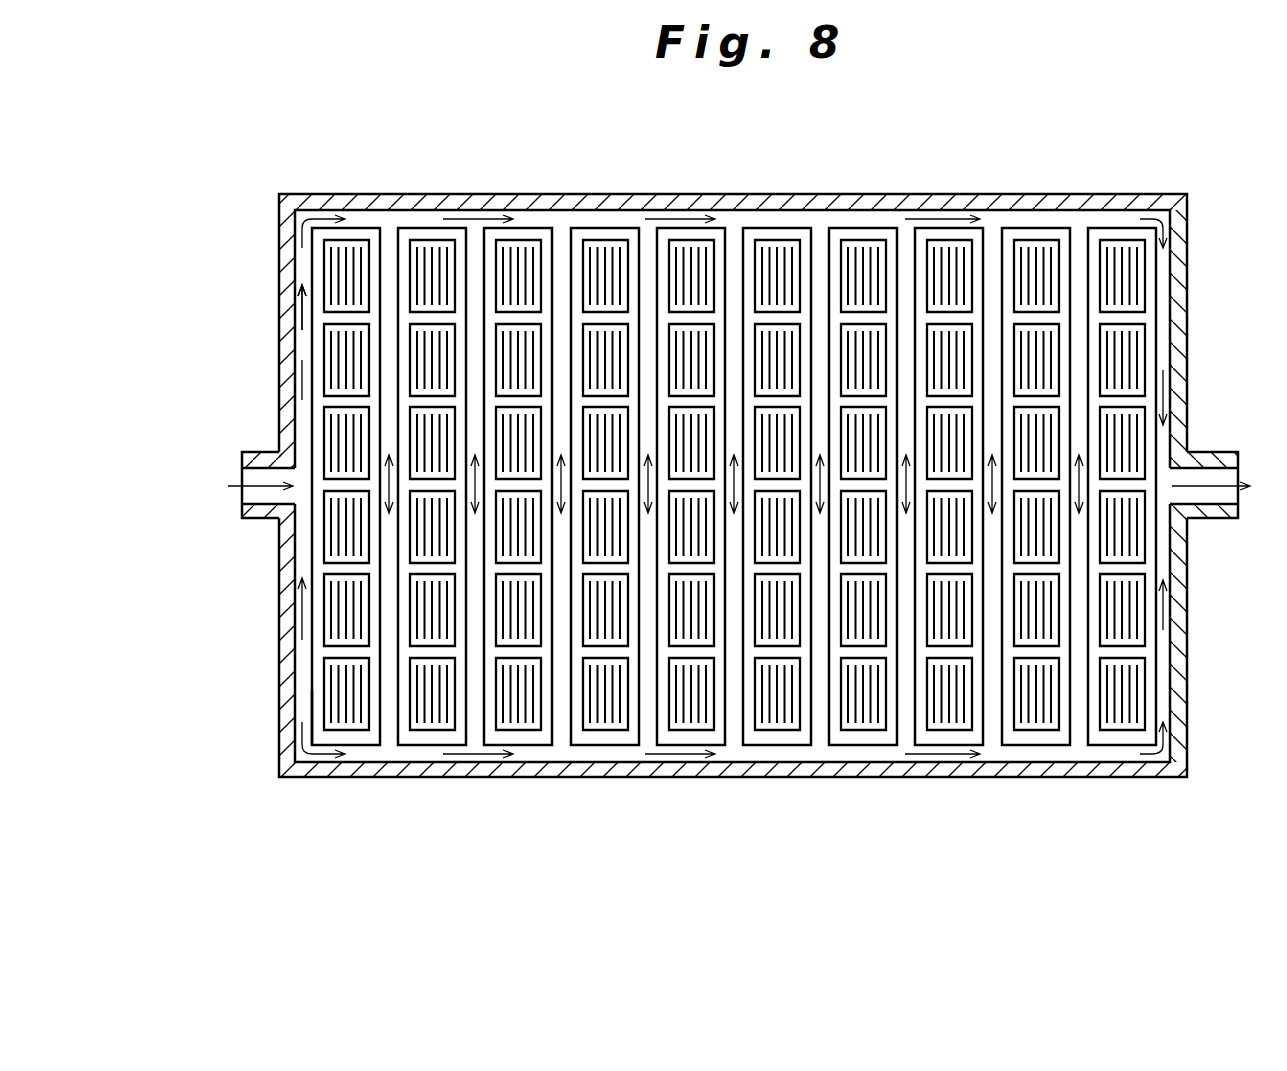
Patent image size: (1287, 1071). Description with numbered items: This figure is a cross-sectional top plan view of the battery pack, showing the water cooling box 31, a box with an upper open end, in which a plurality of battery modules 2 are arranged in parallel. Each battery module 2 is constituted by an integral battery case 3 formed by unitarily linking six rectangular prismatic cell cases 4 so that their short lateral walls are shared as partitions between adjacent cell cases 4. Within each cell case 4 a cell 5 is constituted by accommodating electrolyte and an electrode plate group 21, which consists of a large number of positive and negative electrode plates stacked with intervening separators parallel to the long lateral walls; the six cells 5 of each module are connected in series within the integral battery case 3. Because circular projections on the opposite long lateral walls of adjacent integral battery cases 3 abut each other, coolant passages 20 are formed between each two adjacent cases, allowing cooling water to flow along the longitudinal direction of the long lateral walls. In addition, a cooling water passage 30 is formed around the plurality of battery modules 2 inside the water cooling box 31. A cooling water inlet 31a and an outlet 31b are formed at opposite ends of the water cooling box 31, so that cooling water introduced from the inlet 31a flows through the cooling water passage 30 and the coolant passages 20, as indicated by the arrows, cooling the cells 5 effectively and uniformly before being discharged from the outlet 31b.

The battery module 2 is at (355, 748).
The integral battery case 3 is at (297, 702).
The cell case 4 is at (322, 676).
The cell 5 is at (310, 363).
The coolant passage 20 is at (385, 728).
The electrode plate group 21 is at (345, 710).
The cooling water passage 30 is at (858, 222).
The water cooling box 31 is at (750, 770).
The cooling water inlet 31a is at (250, 492).
The outlet 31b is at (1218, 497).